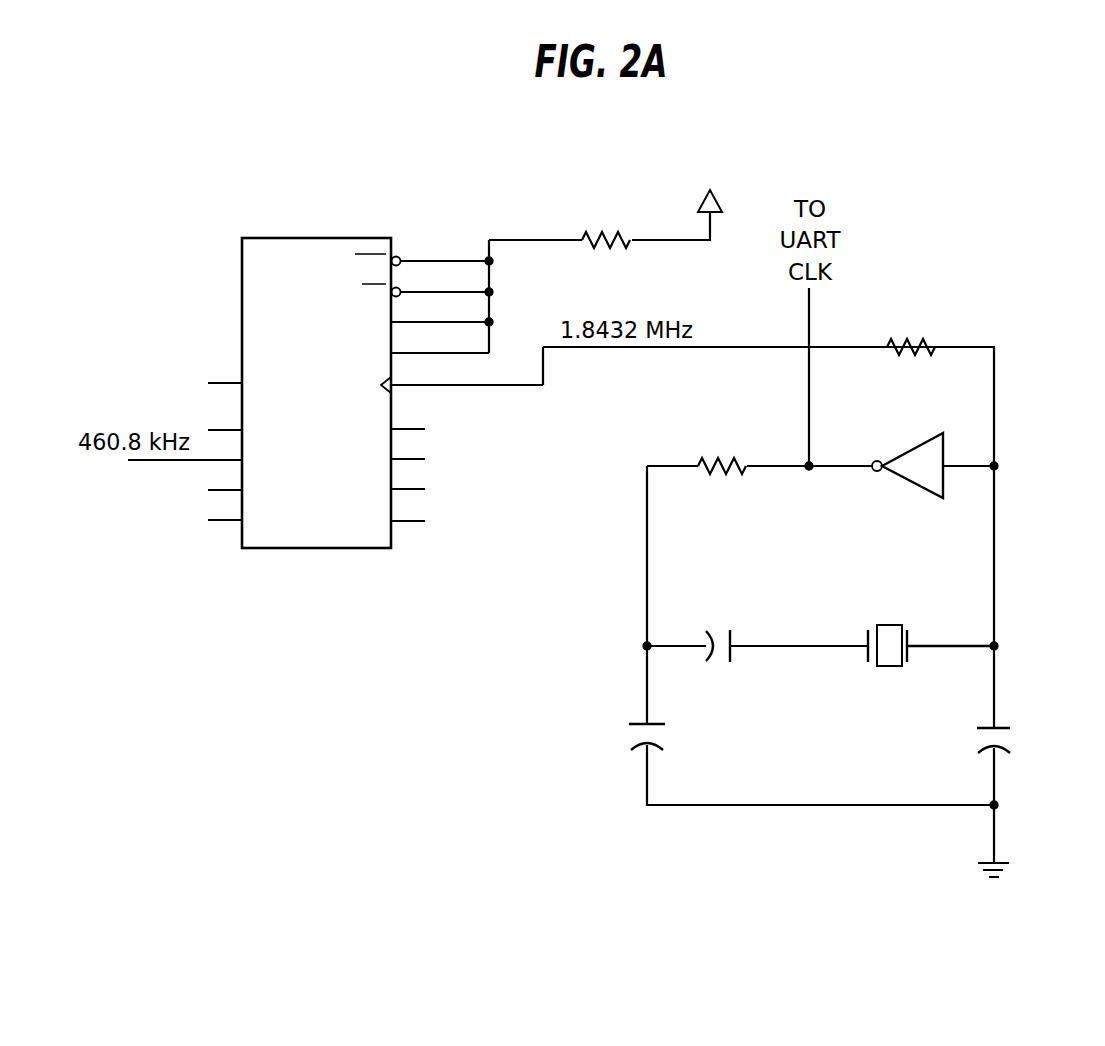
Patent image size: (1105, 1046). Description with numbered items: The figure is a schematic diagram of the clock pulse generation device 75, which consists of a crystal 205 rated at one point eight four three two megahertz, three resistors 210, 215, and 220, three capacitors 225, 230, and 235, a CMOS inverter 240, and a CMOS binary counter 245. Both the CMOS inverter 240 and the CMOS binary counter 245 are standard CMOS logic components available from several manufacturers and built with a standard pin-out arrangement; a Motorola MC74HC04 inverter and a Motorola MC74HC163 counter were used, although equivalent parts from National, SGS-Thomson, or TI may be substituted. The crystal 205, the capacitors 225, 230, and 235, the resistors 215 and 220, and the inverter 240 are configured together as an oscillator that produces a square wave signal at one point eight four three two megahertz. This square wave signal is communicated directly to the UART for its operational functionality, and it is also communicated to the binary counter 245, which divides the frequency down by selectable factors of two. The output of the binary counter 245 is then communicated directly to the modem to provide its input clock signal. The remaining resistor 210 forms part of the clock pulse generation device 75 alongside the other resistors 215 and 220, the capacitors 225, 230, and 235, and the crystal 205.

The CMOS binary counter 245 is at (301, 226).
The resistor 210 is at (612, 228).
The resistor 215 is at (915, 334).
The resistor 220 is at (728, 455).
The CMOS inverter 240 is at (914, 450).
The capacitor 235 is at (718, 630).
The 1.8432 MHz crystal 205 is at (885, 667).
The capacitor 230 is at (620, 733).
The capacitor 225 is at (1000, 723).
The clock pulse generation device 75 is at (607, 803).